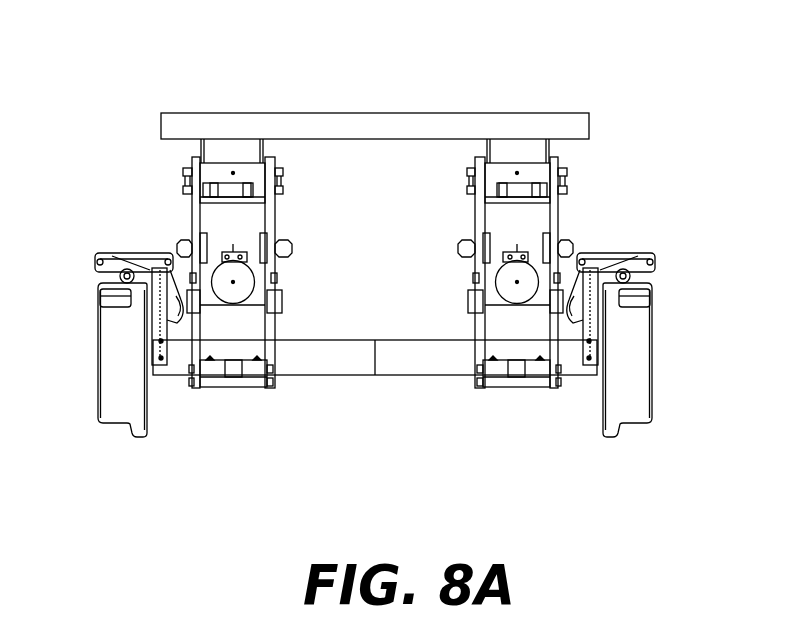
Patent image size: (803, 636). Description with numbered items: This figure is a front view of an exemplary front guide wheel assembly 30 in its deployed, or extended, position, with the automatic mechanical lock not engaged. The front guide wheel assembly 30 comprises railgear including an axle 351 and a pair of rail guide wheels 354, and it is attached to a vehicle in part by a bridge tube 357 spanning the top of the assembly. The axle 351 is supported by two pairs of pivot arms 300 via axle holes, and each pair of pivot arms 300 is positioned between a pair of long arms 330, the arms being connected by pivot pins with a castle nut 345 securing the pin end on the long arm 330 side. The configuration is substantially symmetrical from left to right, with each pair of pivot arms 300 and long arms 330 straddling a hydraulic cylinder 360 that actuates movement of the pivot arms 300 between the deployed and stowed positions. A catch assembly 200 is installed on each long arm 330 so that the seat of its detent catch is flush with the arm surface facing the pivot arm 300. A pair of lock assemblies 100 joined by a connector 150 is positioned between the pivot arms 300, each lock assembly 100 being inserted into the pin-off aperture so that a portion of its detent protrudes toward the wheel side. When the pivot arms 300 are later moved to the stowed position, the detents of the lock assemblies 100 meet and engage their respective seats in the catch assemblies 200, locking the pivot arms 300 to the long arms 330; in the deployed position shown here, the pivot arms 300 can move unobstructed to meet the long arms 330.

The front guide wheel assembly 30 is at (173, 42).
The lock assembly 100 is at (215, 388).
The connector 150 is at (236, 388).
The catch assembly 200 is at (296, 173).
The pivot arm 300 is at (268, 333).
The long arm 330 is at (192, 222).
The castle nut 345 is at (587, 246).
The axle 351 is at (395, 388).
The rail guide wheel 354 is at (87, 340).
The bridge tube 357 is at (493, 113).
The hydraulic cylinder 360 is at (250, 282).